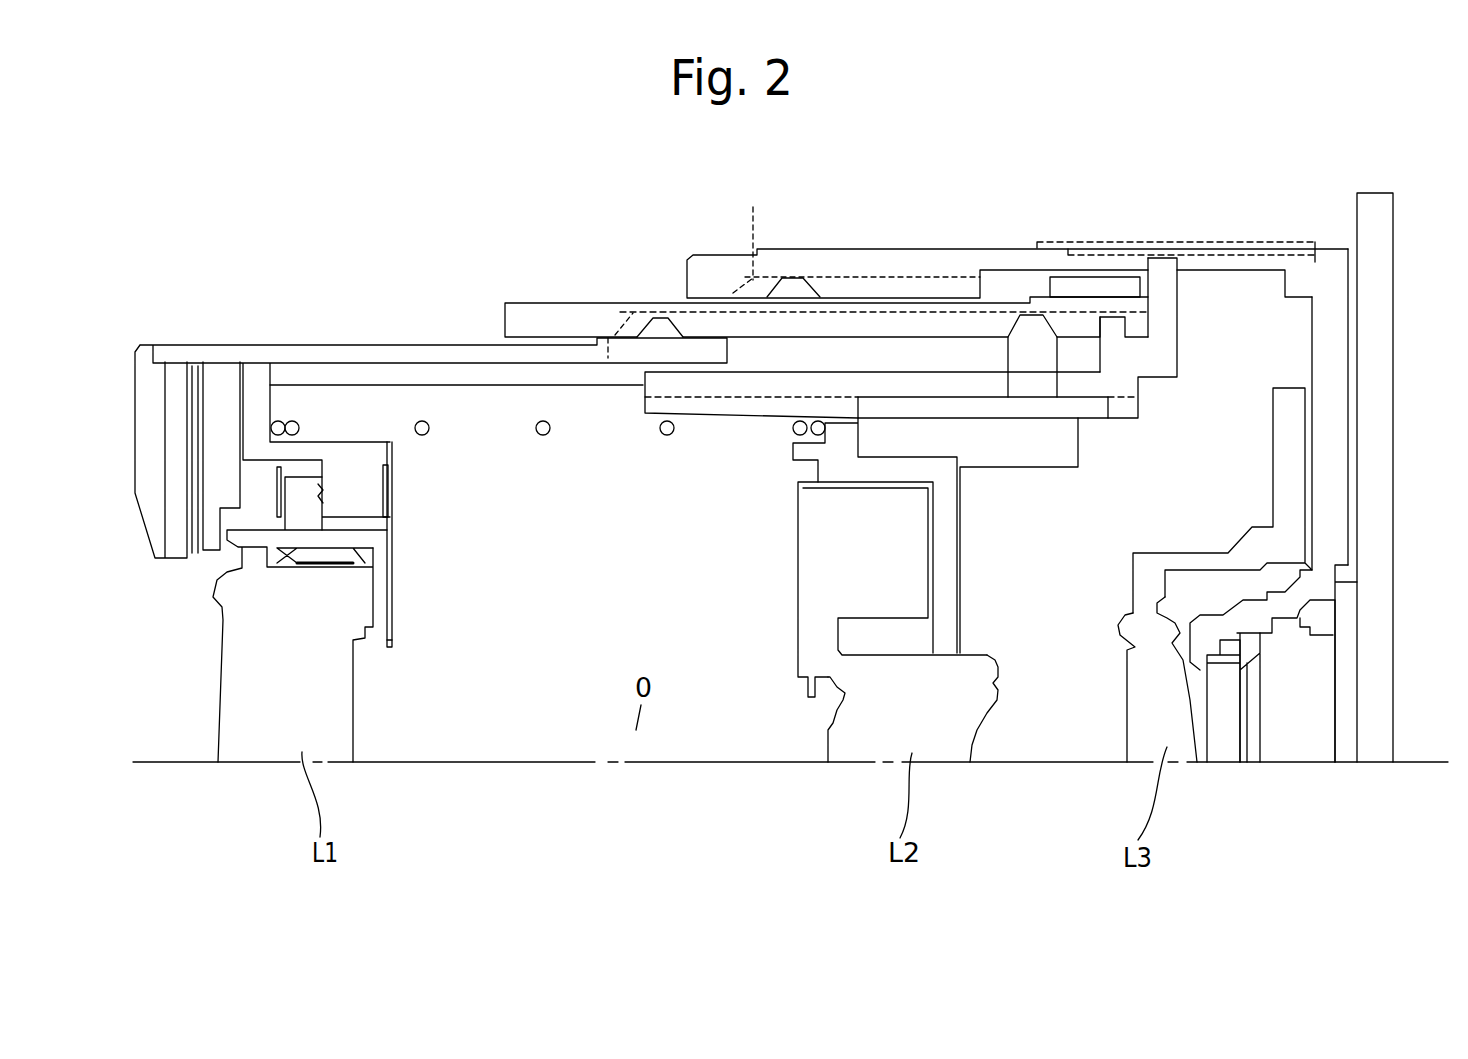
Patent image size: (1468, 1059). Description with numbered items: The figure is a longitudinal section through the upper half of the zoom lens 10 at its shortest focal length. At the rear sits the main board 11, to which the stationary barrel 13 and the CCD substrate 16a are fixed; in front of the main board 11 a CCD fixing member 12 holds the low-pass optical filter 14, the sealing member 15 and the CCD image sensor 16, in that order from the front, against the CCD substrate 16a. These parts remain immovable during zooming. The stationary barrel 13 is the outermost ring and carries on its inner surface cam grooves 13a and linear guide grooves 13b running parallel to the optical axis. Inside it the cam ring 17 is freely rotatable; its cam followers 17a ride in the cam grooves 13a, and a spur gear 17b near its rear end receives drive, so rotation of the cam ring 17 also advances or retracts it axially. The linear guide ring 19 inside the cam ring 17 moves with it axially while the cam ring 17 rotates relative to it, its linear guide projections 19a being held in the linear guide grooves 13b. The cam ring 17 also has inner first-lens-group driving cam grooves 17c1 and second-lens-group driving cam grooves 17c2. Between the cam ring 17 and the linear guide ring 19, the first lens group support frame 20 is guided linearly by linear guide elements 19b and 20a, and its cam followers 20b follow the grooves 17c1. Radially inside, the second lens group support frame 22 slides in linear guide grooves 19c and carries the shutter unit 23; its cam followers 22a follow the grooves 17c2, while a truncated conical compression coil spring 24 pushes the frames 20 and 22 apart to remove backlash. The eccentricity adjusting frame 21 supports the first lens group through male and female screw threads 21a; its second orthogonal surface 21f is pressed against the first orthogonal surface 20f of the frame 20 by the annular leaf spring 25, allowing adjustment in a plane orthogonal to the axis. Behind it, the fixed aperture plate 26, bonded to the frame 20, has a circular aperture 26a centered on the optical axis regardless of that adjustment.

The zoom lens 10 is at (208, 208).
The main board 11 is at (1373, 573).
The CCD fixing member 12 is at (1338, 408).
The stationary barrel 13 is at (708, 273).
The cam grooves 13a is at (757, 229).
The linear guide grooves 13b is at (1228, 253).
The low-pass optical filter 14 is at (1228, 755).
The sealing member 15 is at (1247, 658).
The CCD image sensor 16 is at (1313, 737).
The CCD substrate 16a is at (1348, 735).
The cam ring 17 is at (547, 308).
The cam followers 17a is at (800, 285).
The spur gear 17b is at (1120, 285).
The first-lens-group driving cam grooves 17c1 is at (883, 242).
The second-lens-group driving cam grooves 17c2 is at (888, 312).
The linear guide ring 19 is at (1170, 325).
The linear guide projections 19a is at (1170, 295).
The linear guide element 19b is at (757, 380).
The linear guide grooves 19c is at (1130, 402).
The first lens group support frame 20 is at (248, 357).
The linear guide element 20a is at (592, 377).
The cam followers 20b is at (650, 317).
The first orthogonal surface 20f is at (315, 487).
The eccentricity adjusting frame 21 is at (238, 540).
The male and female screw threads 21a is at (320, 555).
The second orthogonal surface 21f is at (322, 500).
The second lens group support frame 22 is at (1043, 452).
The cam followers 22a is at (1047, 353).
The shutter unit 23 is at (815, 583).
The compression coil spring 24 is at (287, 421).
The annular leaf spring 25 is at (277, 507).
The fixed aperture plate 26 is at (392, 577).
The circular aperture 26a is at (392, 650).